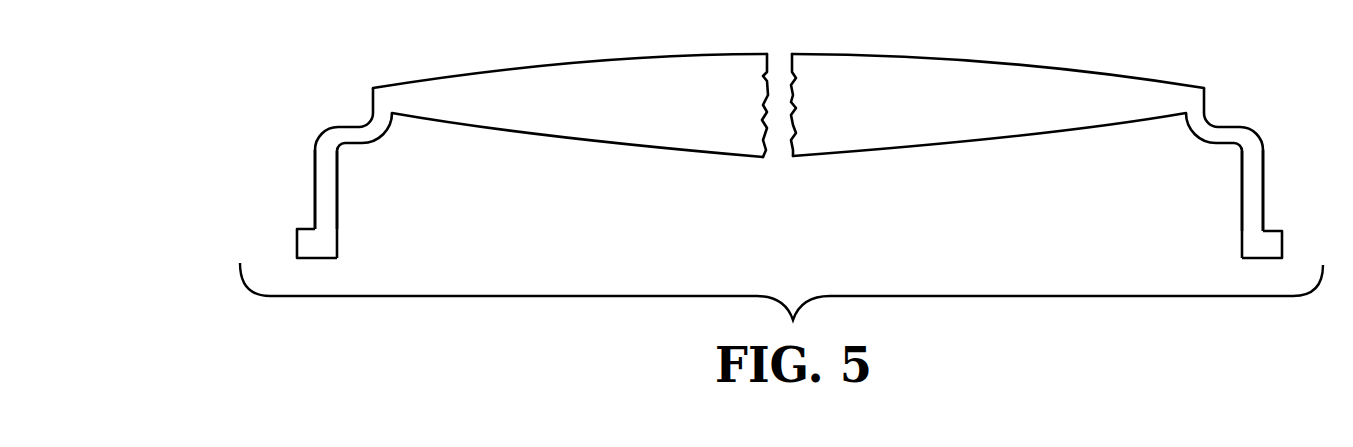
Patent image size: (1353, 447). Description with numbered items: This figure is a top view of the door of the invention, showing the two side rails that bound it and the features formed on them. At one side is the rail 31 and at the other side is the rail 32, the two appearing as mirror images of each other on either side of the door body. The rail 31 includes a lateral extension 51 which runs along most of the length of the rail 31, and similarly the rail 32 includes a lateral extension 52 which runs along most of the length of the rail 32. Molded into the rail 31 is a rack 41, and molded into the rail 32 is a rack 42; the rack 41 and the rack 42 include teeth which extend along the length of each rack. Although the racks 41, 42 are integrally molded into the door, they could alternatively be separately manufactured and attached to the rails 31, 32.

The rail 31 is at (1263, 158).
The rail 32 is at (327, 130).
The rack 41 is at (1262, 260).
The rack 42 is at (334, 258).
The lateral extension 51 is at (1285, 240).
The lateral extension 52 is at (297, 238).